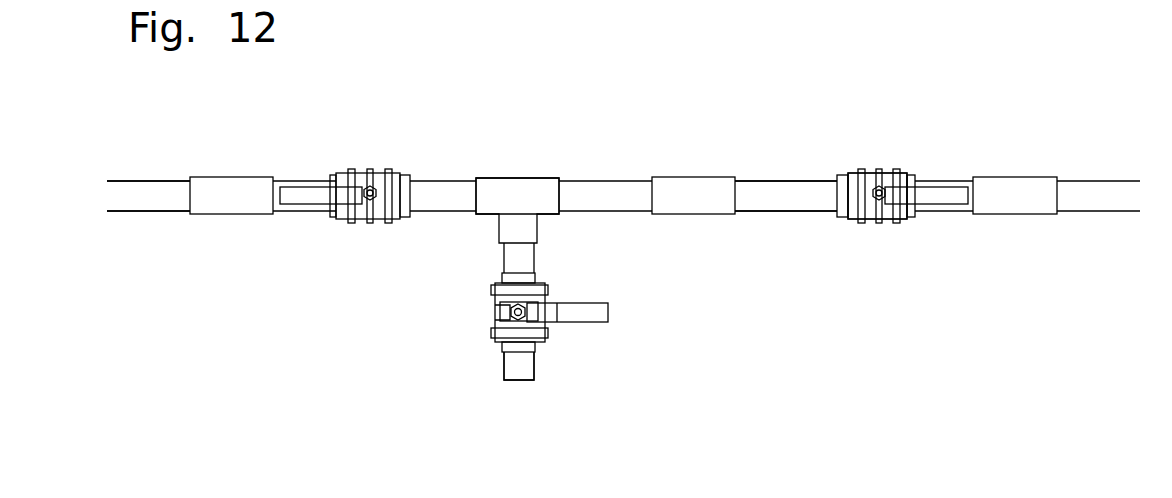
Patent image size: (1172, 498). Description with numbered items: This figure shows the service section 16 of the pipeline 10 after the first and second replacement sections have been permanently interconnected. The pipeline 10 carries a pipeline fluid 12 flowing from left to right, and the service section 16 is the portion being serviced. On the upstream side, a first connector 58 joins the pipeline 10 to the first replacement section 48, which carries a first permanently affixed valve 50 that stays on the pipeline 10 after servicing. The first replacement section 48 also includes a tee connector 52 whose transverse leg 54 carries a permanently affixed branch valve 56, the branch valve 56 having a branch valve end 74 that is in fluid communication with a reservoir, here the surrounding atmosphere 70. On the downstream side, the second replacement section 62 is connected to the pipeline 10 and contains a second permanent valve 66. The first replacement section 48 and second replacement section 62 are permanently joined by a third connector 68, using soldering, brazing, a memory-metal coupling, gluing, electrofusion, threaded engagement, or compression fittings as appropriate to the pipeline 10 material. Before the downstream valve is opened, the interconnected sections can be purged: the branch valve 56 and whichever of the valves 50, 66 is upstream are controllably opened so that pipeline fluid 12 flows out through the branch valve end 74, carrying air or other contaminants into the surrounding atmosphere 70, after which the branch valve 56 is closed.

The pipeline 10 is at (155, 178).
The pipeline fluid 12 is at (136, 209).
The service section 16 is at (684, 280).
The first replacement section 48 is at (460, 160).
The first permanently affixed valve 50 is at (385, 169).
The tee connector 52 is at (533, 178).
The transverse leg 54 is at (502, 255).
The permanently affixed branch valve 56 is at (494, 310).
The first connector 58 is at (235, 177).
The second replacement section 62 is at (800, 158).
The second permanent valve 66 is at (905, 169).
The third connector 68 is at (697, 177).
The surrounding atmosphere 70 is at (537, 419).
The branch valve end 74 is at (534, 365).